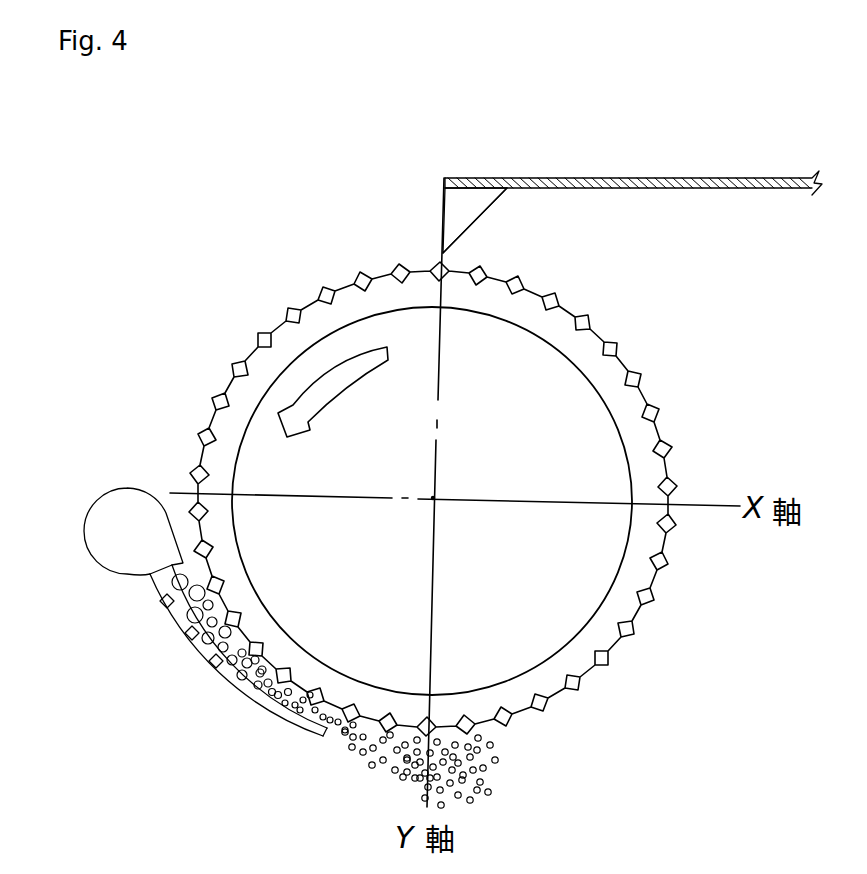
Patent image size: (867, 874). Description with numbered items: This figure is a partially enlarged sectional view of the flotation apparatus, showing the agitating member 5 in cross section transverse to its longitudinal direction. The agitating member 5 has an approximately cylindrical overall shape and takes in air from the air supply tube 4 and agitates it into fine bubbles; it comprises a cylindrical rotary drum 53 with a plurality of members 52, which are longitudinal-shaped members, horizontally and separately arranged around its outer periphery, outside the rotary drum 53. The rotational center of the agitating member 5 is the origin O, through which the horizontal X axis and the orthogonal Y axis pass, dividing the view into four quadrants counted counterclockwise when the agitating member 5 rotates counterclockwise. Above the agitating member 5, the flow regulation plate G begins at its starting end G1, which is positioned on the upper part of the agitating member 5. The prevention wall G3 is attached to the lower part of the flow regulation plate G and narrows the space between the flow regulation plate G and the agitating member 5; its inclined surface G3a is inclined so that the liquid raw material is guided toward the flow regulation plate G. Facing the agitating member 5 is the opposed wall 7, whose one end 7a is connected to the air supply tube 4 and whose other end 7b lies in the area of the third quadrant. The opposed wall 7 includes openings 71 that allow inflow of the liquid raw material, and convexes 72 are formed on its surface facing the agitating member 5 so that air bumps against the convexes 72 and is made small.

The air supply tube 4 is at (115, 523).
The agitating member 5 is at (468, 494).
The opposed wall 7 is at (218, 692).
The one end of the opposed wall 7a is at (145, 571).
The other end of the opposed wall 7b is at (325, 735).
The members 52 is at (541, 707).
The rotary drum 53 is at (575, 367).
The openings 71 is at (212, 667).
The convexes 72 is at (323, 703).
The flow regulation plate G is at (652, 178).
The starting end of the flow regulation plate G1 is at (445, 178).
The prevention wall G3 is at (458, 213).
The inclined surface G3a is at (485, 212).
The origin O is at (437, 496).